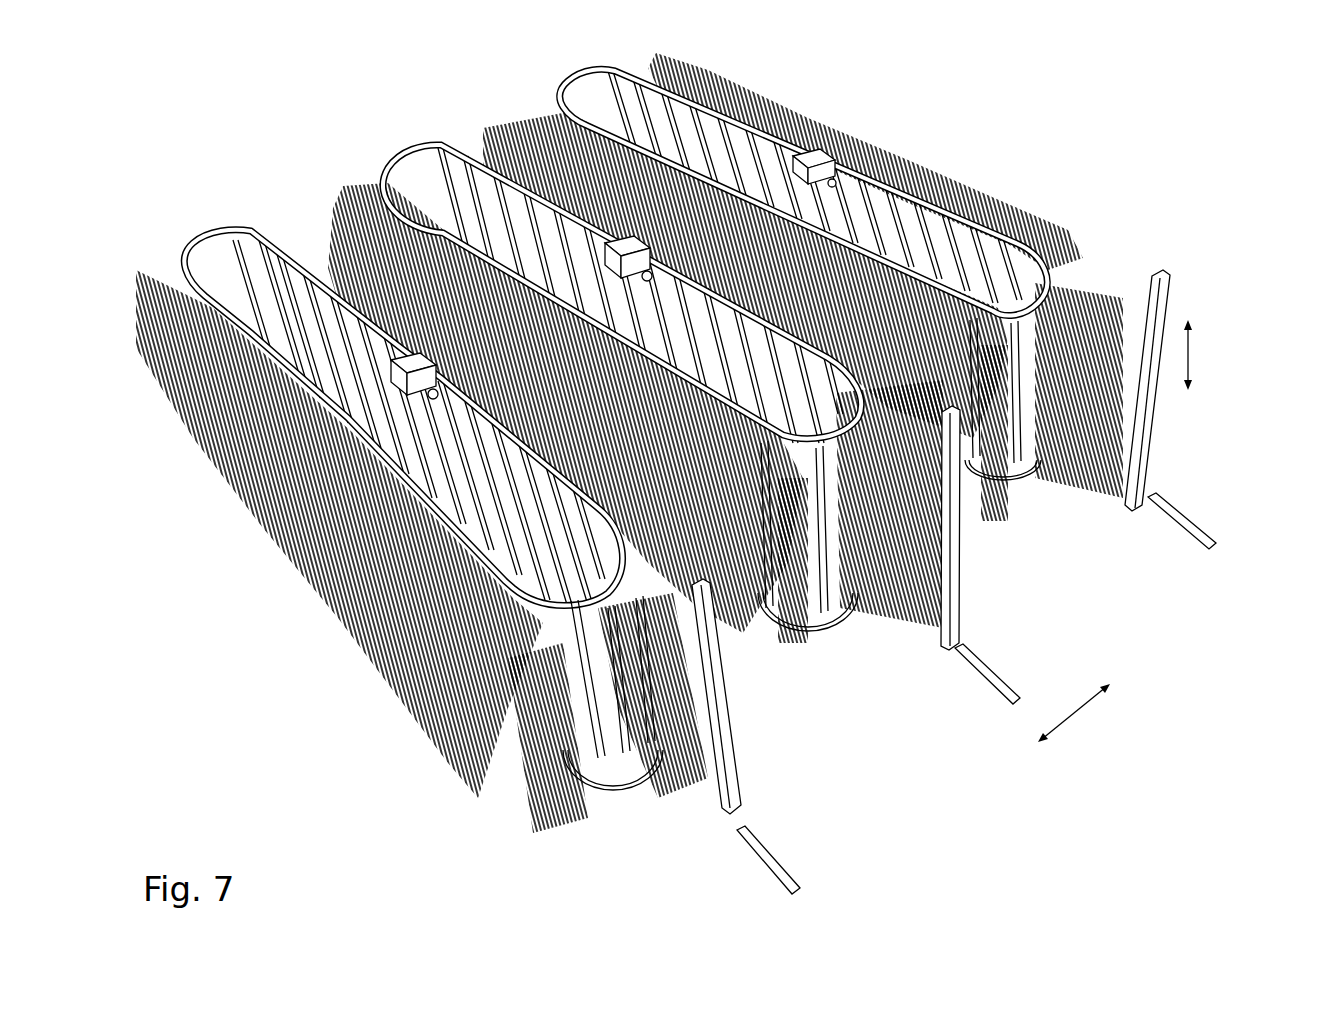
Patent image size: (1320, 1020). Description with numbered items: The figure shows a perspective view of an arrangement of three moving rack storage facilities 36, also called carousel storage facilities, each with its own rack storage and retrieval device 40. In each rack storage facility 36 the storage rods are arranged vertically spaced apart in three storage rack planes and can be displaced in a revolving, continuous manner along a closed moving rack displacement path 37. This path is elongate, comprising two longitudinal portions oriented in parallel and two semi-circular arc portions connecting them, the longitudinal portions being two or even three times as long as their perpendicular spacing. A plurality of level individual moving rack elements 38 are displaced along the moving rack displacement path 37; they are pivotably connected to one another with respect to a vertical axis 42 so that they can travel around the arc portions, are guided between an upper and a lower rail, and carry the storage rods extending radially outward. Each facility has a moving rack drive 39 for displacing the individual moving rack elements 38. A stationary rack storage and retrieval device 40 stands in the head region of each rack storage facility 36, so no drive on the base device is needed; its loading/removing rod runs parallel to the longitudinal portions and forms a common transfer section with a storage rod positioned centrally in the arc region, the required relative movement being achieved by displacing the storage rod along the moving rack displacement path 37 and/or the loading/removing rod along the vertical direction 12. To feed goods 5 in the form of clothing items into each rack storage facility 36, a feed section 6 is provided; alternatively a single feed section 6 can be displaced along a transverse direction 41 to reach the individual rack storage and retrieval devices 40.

The goods 5 is at (490, 776).
The feed section 6 is at (1173, 508).
The vertical direction 12 is at (1183, 347).
The rack storage facility 36 is at (537, 82).
The moving rack displacement path 37 is at (795, 125).
The individual moving rack elements 38 is at (978, 240).
The moving rack drive 39 is at (818, 140).
The rack storage and retrieval device 40 is at (1143, 390).
The transverse direction 41 is at (1075, 702).
The vertical axis 42 is at (820, 630).